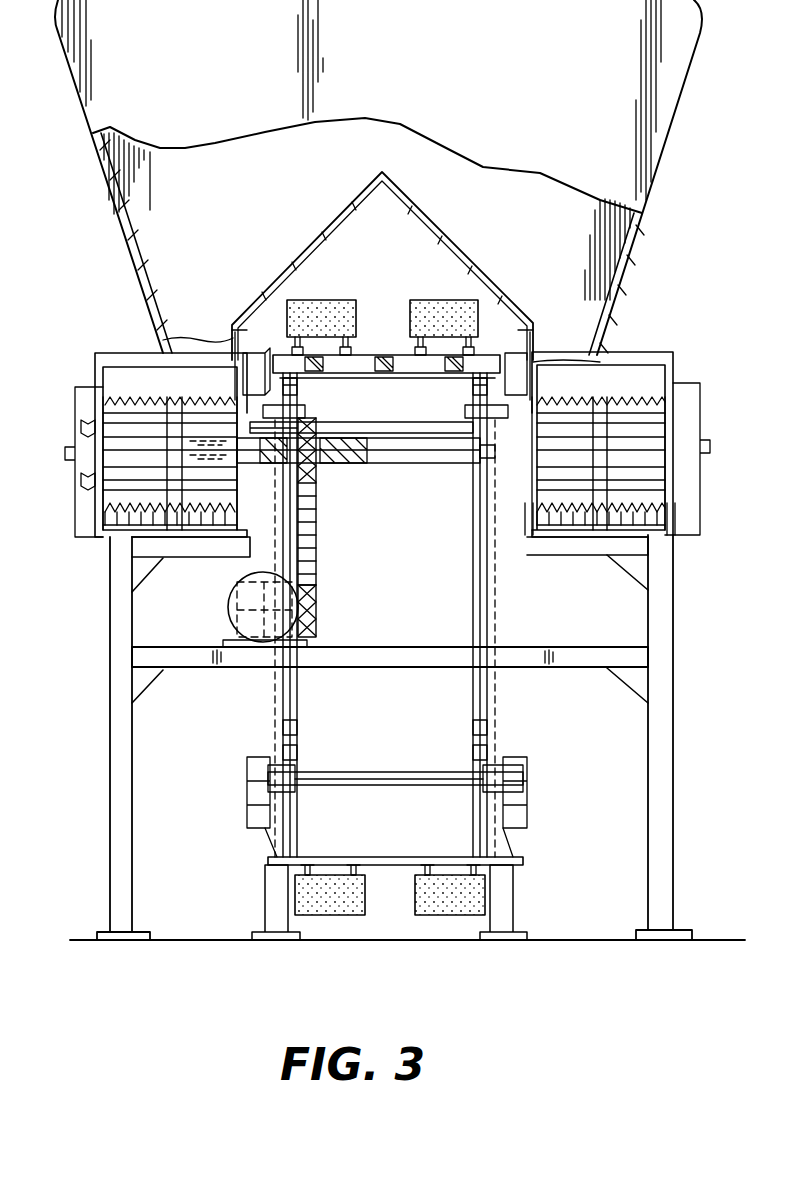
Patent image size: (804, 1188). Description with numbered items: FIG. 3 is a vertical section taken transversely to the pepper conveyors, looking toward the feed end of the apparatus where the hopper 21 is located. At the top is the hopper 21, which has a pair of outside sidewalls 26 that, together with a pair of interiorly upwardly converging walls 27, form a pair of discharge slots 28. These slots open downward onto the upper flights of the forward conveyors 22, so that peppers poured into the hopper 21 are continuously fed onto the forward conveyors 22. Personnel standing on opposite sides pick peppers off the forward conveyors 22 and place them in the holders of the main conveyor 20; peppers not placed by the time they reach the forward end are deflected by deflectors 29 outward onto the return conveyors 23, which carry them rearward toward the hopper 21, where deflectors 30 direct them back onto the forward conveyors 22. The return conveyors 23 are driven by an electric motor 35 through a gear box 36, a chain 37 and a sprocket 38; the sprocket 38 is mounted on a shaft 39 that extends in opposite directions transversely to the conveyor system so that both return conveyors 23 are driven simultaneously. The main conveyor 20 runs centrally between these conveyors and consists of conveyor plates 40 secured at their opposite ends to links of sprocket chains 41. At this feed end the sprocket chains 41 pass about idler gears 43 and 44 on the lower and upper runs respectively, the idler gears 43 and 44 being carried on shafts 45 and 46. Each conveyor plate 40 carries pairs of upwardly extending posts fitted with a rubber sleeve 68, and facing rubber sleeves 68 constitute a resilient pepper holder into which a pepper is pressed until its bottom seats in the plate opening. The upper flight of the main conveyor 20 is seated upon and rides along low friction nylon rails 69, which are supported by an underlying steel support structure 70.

The main conveyor 20 is at (387, 355).
The hopper 21 is at (107, 175).
The forward conveyors 22 is at (225, 398).
The return conveyors 23 is at (147, 398).
The outside sidewalls 26 is at (140, 252).
The interiorly upwardly converging walls 27 is at (330, 221).
The discharge slots 28 is at (210, 334).
The deflectors 29 is at (113, 367).
The deflectors 30 is at (617, 368).
The electric motor 35 is at (245, 583).
The gear box 36 is at (240, 612).
The chain 37 is at (312, 581).
The sprocket 38 is at (306, 479).
The shaft 39 is at (402, 459).
The conveyor plates 40 is at (277, 355).
The sprocket chains 41 is at (294, 698).
The idler gears 43 is at (296, 724).
The idler gears 44 is at (293, 389).
The shaft 45 is at (407, 778).
The shaft 46 is at (413, 422).
The rubber sleeve 68 is at (343, 300).
The low friction nylon rails 69 is at (376, 367).
The steel support structure 70 is at (434, 373).